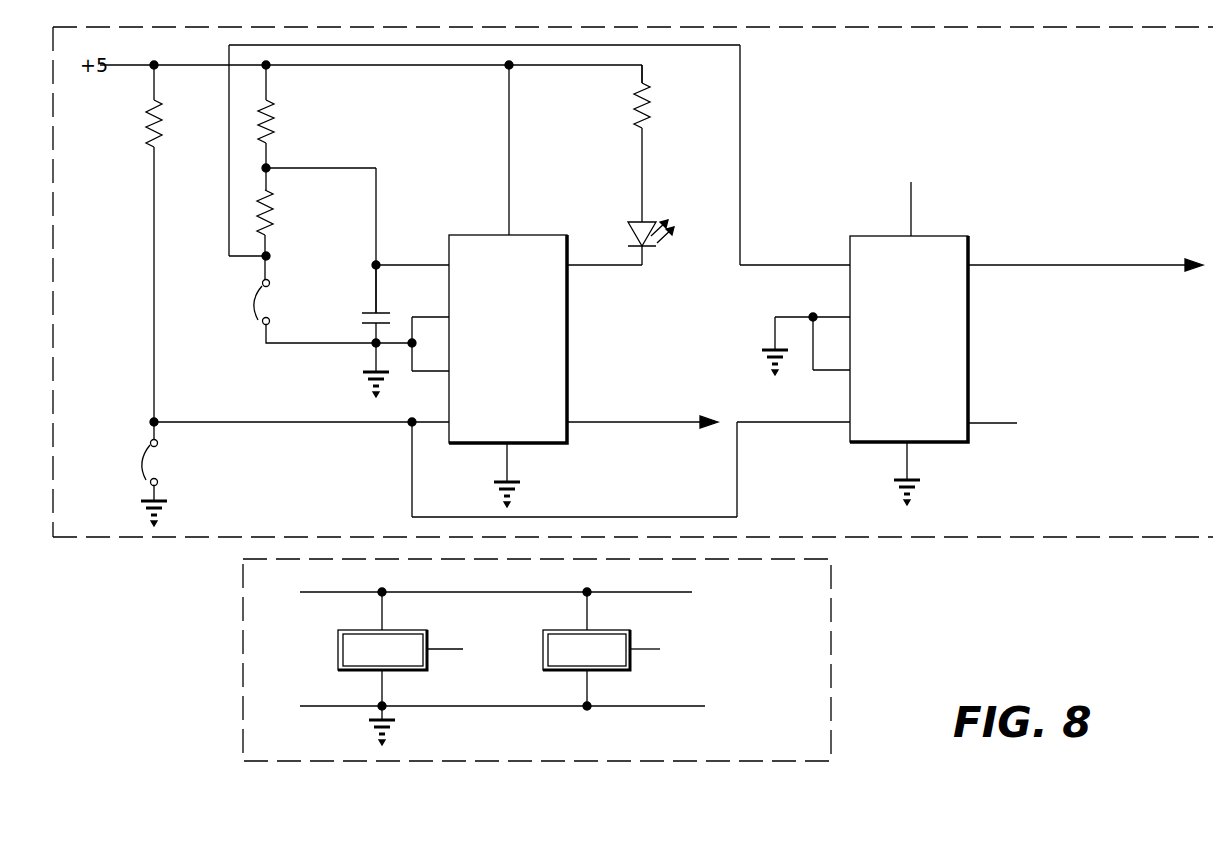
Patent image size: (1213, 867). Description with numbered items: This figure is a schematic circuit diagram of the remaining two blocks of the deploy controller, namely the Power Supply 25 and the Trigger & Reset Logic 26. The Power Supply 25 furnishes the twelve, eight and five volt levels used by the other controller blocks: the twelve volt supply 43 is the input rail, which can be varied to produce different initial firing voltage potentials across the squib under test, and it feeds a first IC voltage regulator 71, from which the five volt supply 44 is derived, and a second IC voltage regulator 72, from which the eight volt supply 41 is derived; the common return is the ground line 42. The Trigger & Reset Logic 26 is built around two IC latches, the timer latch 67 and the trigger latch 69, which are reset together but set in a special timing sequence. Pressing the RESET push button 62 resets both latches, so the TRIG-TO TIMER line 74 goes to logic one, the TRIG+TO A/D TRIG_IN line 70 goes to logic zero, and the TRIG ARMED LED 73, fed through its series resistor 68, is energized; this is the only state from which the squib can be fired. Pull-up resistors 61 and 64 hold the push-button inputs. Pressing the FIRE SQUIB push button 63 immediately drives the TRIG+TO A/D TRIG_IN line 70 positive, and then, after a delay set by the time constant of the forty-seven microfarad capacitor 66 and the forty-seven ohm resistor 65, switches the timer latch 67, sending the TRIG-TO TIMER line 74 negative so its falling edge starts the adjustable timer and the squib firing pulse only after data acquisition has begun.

The Power Supply 25 is at (831, 575).
The Trigger & Reset Logic 26 is at (1037, 537).
The +8 volt supply 41 is at (655, 650).
The ground line 42 is at (705, 706).
The +12 volt supply 43 is at (692, 592).
The +5 supply 44 is at (455, 650).
The 1K resistor 61 is at (158, 147).
The RESET push button 62 is at (157, 462).
The FIRE SQUIB push button 63 is at (258, 332).
The 10K resistor 64 is at (275, 108).
The 47 ohm resistor 65 is at (268, 237).
The 47 microfarad capacitor 66 is at (362, 320).
The timer latch 67 is at (451, 236).
The 1K resistor 68 is at (652, 102).
The trigger latch 69 is at (852, 237).
The TRIG+TO A/D TRIG_IN line 70 is at (1115, 266).
The 7805 IC voltage regulator 71 is at (338, 645).
The 7808 IC voltage regulator 72 is at (543, 645).
The TRIG ARMED LED 73 is at (650, 250).
The TRIG-TO TIMER line 74 is at (670, 425).